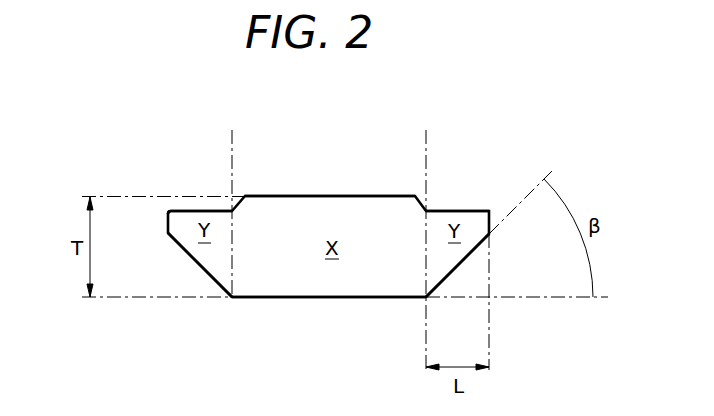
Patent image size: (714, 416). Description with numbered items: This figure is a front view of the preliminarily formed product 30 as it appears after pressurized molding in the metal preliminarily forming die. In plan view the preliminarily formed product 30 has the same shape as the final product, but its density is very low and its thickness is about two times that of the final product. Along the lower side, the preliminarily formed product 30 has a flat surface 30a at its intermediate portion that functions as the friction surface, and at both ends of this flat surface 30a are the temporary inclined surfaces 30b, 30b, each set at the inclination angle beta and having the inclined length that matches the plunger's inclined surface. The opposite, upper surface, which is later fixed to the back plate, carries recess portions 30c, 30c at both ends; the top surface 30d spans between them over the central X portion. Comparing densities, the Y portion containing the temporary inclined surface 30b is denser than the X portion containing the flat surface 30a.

The preliminarily formed product 30 is at (118, 133).
The flat surface 30a is at (324, 297).
The temporary inclined surface 30b is at (197, 266).
The recess portion 30c is at (199, 196).
The top surface (X region) 30d is at (330, 196).